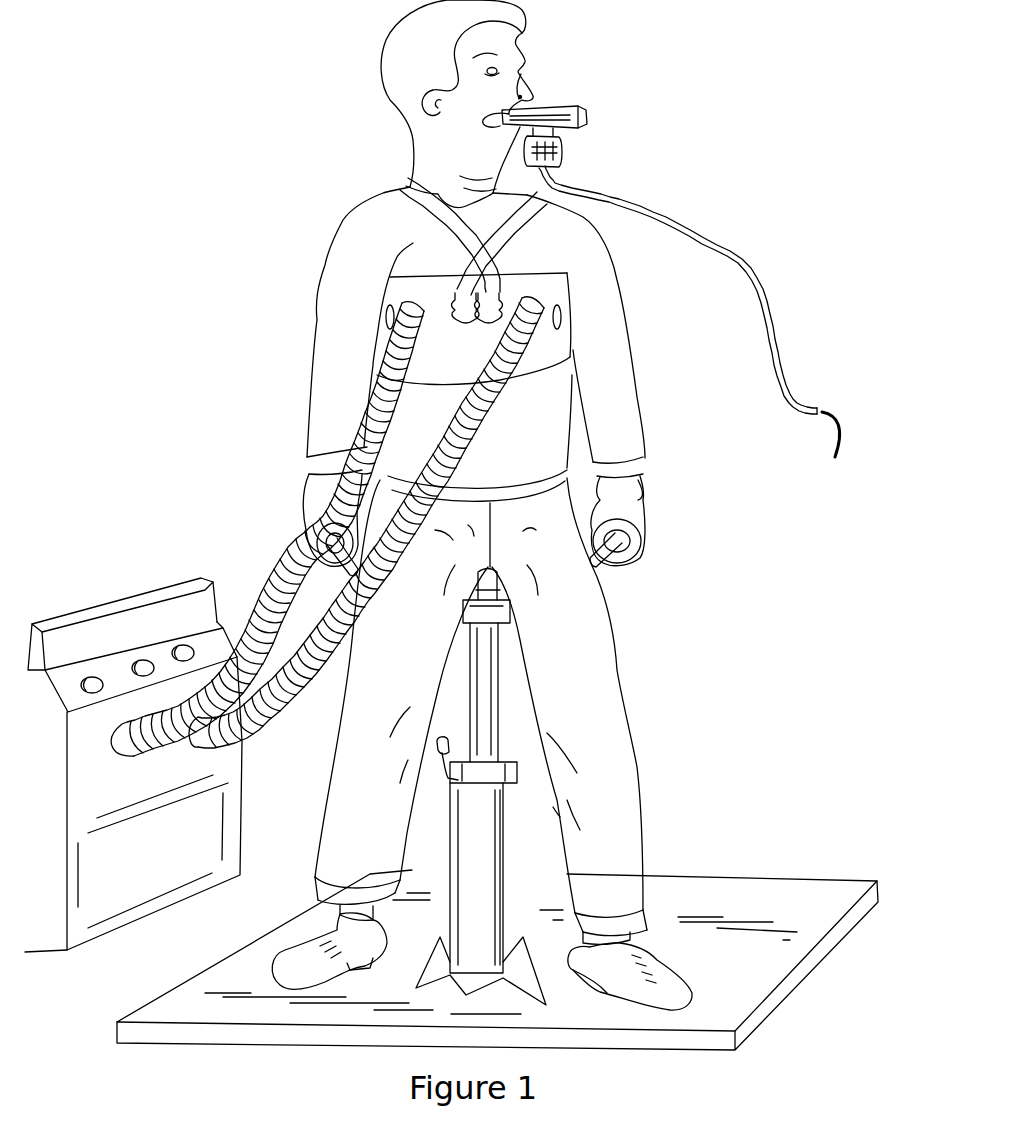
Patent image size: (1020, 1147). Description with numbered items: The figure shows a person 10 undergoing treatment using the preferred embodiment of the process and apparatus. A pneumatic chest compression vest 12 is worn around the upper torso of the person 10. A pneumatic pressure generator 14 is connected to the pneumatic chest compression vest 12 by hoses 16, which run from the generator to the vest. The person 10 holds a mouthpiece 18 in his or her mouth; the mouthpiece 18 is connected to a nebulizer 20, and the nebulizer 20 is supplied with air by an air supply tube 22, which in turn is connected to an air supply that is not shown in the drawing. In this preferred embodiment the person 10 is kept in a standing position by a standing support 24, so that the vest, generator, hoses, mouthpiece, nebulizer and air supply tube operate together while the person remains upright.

The person 10 is at (546, 54).
The pneumatic chest compression vest 12 is at (381, 307).
The pneumatic pressure generator 14 is at (108, 590).
The hoses 16 is at (283, 660).
The mouthpiece 18 is at (590, 113).
The nebulizer 20 is at (567, 153).
The air supply tube 22 is at (740, 260).
The standing support 24 is at (503, 727).